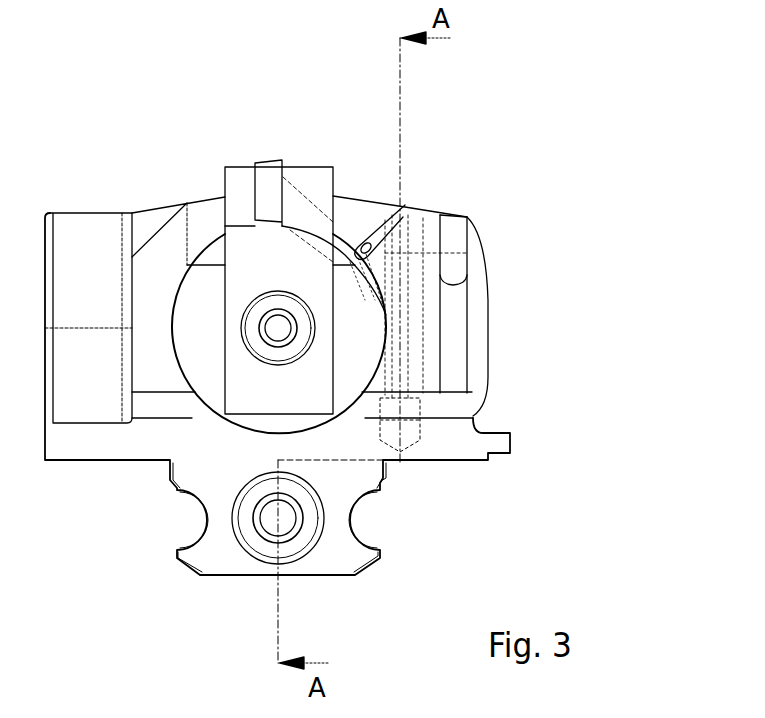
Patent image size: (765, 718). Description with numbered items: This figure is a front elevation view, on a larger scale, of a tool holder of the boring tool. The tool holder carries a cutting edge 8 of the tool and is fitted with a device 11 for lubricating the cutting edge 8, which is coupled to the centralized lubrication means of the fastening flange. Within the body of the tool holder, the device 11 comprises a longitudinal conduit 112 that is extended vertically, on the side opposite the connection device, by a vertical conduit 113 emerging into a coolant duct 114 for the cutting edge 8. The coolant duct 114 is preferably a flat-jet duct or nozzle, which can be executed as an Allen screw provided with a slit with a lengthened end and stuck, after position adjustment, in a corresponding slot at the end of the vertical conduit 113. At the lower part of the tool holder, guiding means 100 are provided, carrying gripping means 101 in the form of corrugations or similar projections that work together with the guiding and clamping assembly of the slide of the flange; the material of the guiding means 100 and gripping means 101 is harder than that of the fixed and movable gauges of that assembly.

The cutting edge 8 is at (272, 162).
The device for lubricating the cutting edge 11 is at (448, 344).
The longitudinal conduit 112 is at (398, 418).
The vertical conduit 113 is at (418, 315).
The coolant duct 114 is at (375, 238).
The guiding means 100 is at (170, 507).
The gripping means 101 is at (200, 533).